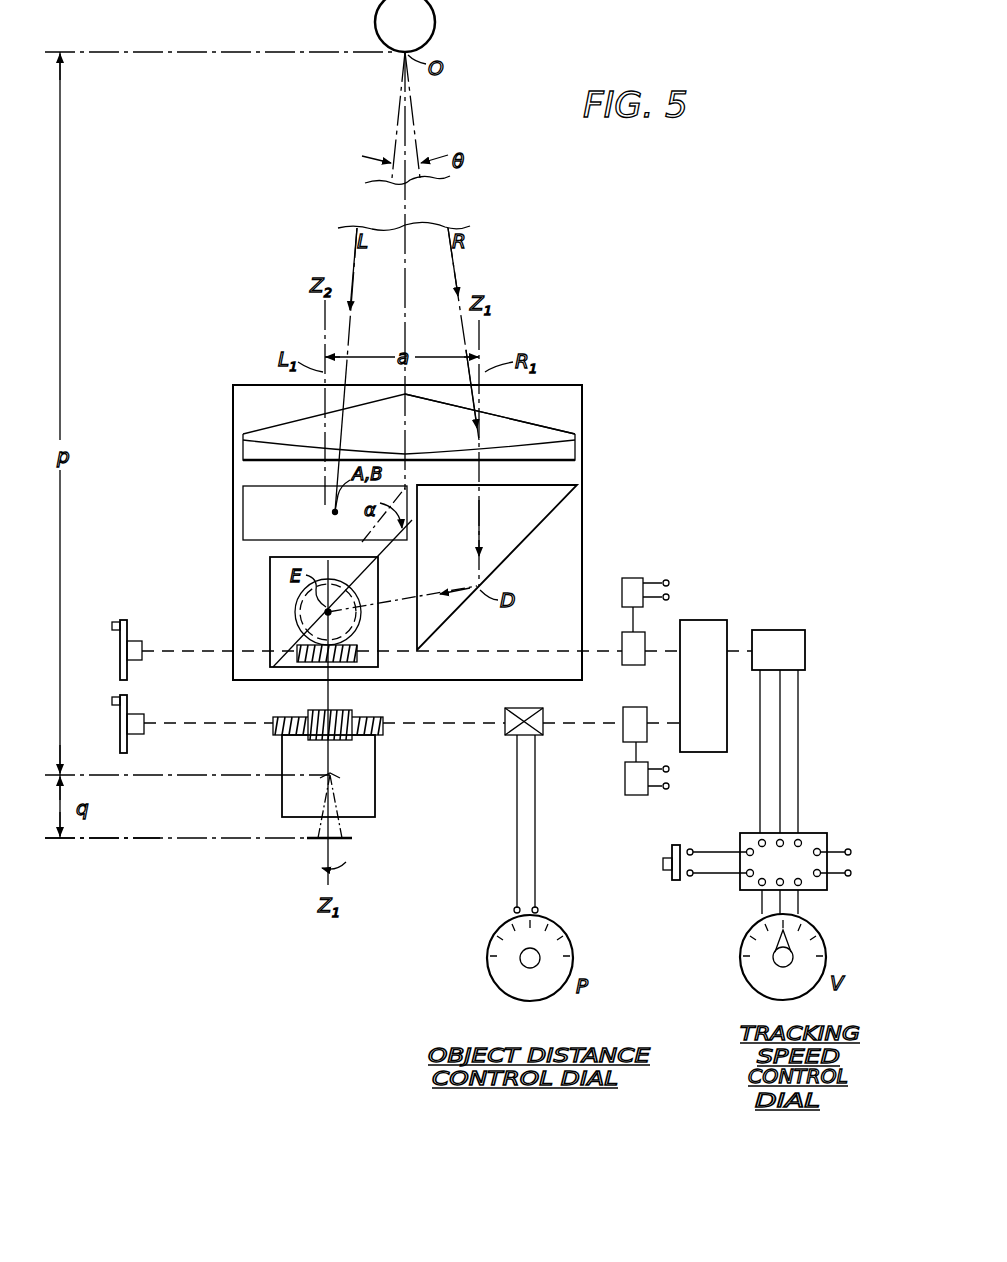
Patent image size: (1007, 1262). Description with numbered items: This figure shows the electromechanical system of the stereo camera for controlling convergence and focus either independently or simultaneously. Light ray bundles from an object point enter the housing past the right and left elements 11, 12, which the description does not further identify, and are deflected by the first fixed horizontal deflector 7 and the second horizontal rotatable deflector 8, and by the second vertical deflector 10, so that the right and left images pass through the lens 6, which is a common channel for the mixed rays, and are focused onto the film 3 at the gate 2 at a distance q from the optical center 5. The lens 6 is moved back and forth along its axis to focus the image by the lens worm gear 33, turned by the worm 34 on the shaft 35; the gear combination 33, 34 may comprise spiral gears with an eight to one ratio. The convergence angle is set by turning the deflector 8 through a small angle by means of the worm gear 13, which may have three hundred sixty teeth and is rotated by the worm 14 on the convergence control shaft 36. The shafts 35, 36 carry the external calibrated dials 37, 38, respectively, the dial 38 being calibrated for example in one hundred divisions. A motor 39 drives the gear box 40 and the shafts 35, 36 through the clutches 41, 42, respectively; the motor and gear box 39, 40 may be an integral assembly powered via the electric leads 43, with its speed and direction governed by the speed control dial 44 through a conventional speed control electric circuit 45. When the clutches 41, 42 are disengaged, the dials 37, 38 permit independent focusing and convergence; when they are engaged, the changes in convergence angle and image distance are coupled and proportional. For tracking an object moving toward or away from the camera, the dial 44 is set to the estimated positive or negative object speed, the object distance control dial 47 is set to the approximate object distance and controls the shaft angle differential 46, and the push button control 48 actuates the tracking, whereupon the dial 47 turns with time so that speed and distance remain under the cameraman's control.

The gate 2 is at (195, 841).
The film 3 is at (340, 840).
The optical center 5 is at (328, 777).
The lens 6 is at (376, 788).
The first fixed horizontal deflector 7 is at (452, 552).
The second horizontal rotatable deflector 8 is at (270, 590).
The second vertical deflector 10 is at (243, 517).
The right lens element 11 is at (545, 405).
The left lens element 12 is at (297, 432).
The worm gear 13 is at (296, 613).
The worm 14 is at (357, 654).
The lens worm gear 33 is at (383, 733).
The worm 34 is at (322, 712).
The shaft 35 is at (478, 722).
The convergence control shaft 36 is at (497, 648).
The calibrated dial 37 is at (127, 752).
The calibrated dial 38 is at (128, 622).
The motor 39 is at (788, 630).
The gear box 40 is at (716, 694).
The clutch 41 is at (623, 743).
The clutch 42 is at (622, 638).
The electric leads 43 is at (780, 726).
The speed control dial 44 is at (826, 957).
The speed control electric circuit 45 is at (745, 833).
The shaft angle differential 46 is at (505, 735).
The dial 47 is at (497, 988).
The push button control 48 is at (680, 845).